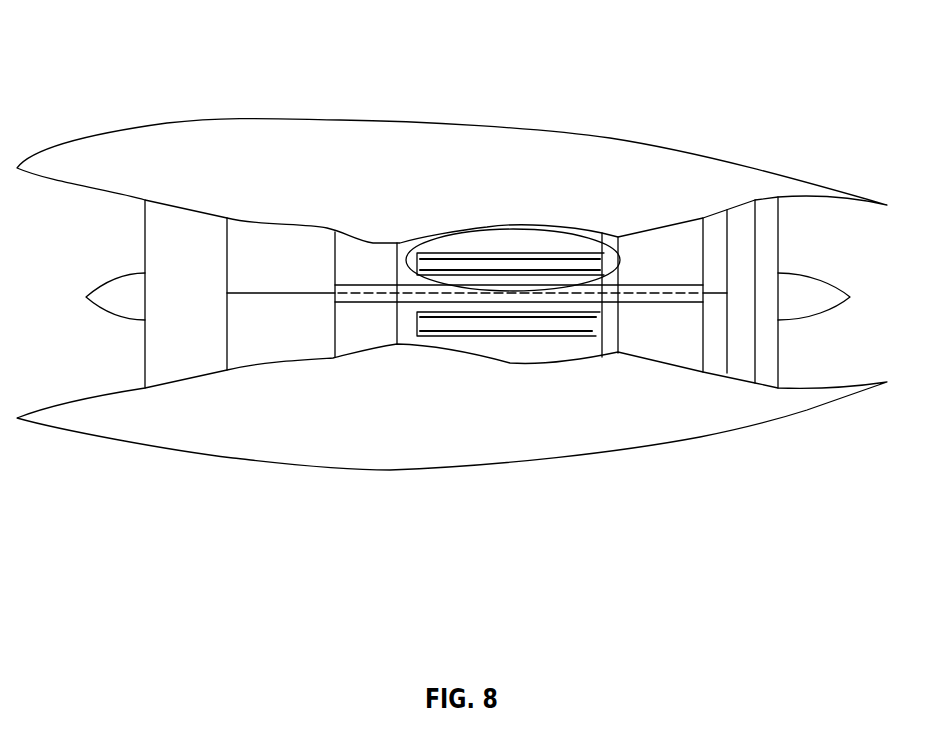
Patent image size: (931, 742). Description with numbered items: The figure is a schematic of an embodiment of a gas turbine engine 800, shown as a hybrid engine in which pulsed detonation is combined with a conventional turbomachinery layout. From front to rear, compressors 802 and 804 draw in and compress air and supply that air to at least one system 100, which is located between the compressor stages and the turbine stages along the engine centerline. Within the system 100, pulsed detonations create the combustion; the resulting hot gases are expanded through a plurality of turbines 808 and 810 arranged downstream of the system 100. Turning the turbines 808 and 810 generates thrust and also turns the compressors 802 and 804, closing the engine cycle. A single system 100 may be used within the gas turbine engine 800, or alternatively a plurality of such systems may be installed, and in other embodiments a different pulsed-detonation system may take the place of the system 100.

The gas turbine engine 800 is at (259, 60).
The compressor 802 is at (162, 232).
The compressor 804 is at (365, 248).
The system 100 is at (547, 237).
The turbine 808 is at (638, 238).
The turbine 810 is at (742, 212).